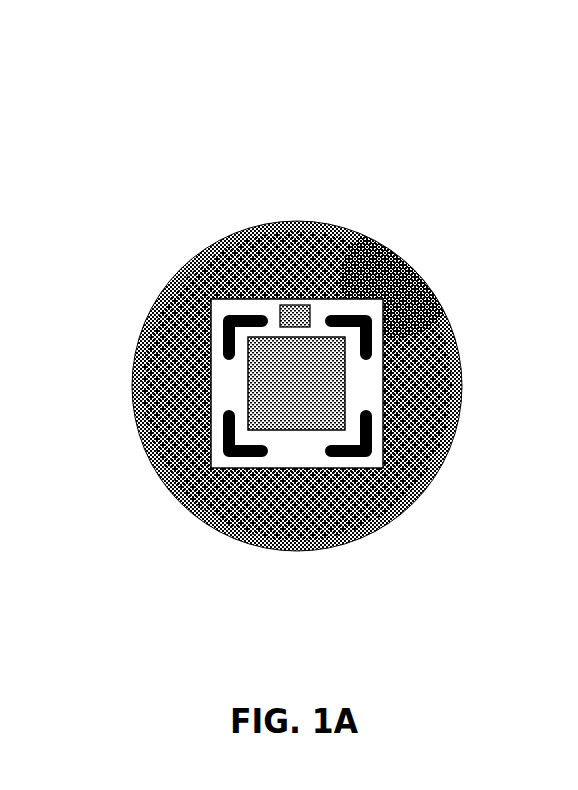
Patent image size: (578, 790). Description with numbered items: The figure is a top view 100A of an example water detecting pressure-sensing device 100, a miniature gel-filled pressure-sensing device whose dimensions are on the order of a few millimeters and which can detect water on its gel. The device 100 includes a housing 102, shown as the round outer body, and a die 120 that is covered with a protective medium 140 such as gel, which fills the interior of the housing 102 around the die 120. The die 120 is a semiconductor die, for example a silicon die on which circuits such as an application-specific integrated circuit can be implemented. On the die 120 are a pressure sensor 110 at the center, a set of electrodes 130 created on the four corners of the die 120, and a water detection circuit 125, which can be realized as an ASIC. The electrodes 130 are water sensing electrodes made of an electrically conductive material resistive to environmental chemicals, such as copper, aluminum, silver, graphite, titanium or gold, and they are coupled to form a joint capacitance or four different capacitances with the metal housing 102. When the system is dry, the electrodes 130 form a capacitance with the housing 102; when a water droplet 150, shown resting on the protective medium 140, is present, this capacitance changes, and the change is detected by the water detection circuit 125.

The top view 100A is at (108, 108).
The water detecting pressure-sensing device 100 is at (328, 370).
The housing 102 is at (220, 530).
The protective medium 140 is at (237, 270).
The water droplet 150 is at (430, 293).
The die 120 is at (307, 470).
The electrodes 130 is at (373, 435).
The water detection circuit 125 is at (295, 302).
The pressure sensor 110 is at (316, 392).